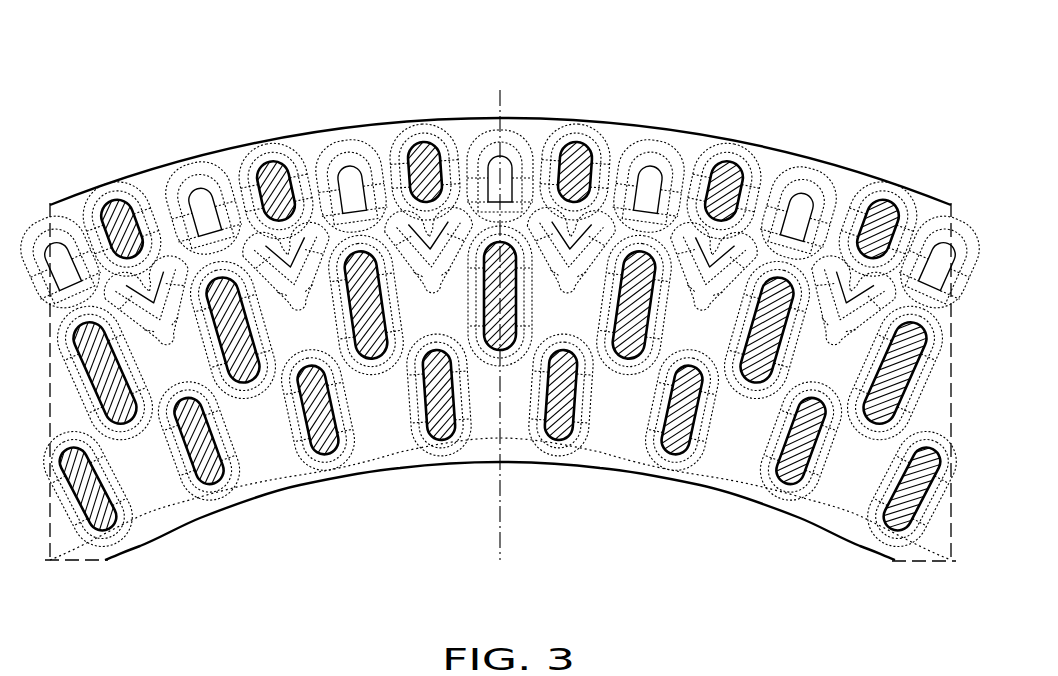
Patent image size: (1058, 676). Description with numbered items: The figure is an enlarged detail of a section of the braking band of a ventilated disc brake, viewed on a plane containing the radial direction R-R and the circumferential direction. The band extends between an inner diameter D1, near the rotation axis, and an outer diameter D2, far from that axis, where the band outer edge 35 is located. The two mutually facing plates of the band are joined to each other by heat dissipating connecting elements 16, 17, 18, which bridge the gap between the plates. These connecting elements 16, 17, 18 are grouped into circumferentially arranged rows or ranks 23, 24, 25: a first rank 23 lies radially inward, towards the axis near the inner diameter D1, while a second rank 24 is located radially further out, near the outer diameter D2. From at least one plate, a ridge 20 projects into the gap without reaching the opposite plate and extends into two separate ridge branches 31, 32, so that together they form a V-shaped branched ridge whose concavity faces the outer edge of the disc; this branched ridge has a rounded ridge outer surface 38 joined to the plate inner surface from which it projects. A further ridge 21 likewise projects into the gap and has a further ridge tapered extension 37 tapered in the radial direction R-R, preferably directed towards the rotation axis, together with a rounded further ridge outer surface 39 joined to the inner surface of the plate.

The connecting element 16 is at (266, 162).
The connecting element 17 is at (203, 470).
The connecting element 18 is at (434, 463).
The ridge 20 is at (170, 268).
The further ridge 21 is at (200, 207).
The first rank 23 is at (705, 432).
The second rank 24 is at (740, 190).
The rank 25 is at (790, 412).
The ridge branch 31 is at (270, 250).
The ridge branch 32 is at (300, 258).
The band outer edge 35 is at (463, 126).
The further ridge tapered extension 37 is at (376, 170).
The rounded ridge outer surface 38 is at (140, 292).
The rounded further ridge outer surface 39 is at (198, 300).
The inner diameter D1 is at (636, 490).
The outer diameter D2 is at (709, 122).
The radial direction R-R is at (504, 104).